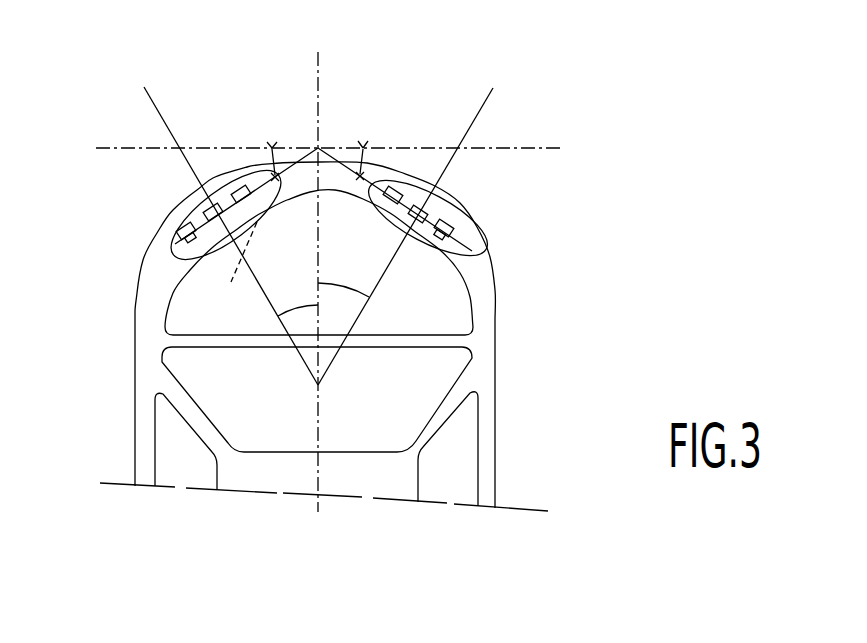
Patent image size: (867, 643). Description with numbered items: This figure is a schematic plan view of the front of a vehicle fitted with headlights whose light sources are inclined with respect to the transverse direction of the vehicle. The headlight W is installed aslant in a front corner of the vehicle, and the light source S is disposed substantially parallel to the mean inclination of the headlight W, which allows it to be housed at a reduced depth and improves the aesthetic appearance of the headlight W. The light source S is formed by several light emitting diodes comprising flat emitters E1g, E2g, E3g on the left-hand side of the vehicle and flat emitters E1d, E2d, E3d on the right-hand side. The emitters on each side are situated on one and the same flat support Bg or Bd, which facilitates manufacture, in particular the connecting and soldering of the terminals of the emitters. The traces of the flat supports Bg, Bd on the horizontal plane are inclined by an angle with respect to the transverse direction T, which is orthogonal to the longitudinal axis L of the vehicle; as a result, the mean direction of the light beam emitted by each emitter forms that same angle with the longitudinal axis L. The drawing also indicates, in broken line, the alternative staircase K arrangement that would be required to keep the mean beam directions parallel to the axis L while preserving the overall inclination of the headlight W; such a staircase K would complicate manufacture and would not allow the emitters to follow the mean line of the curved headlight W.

The longitudinal axis L is at (322, 72).
The transverse direction T is at (115, 148).
The headlight W is at (186, 188).
The light source S is at (150, 297).
The staircase K is at (239, 267).
The flat support (left) Bg is at (166, 256).
The flat support (right) Bd is at (487, 253).
The flat emitter E1g is at (238, 189).
The flat emitter E2g is at (208, 206).
The flat emitter E3g is at (180, 224).
The flat emitter E1d is at (395, 190).
The flat emitter E2d is at (421, 208).
The flat emitter E3d is at (460, 226).